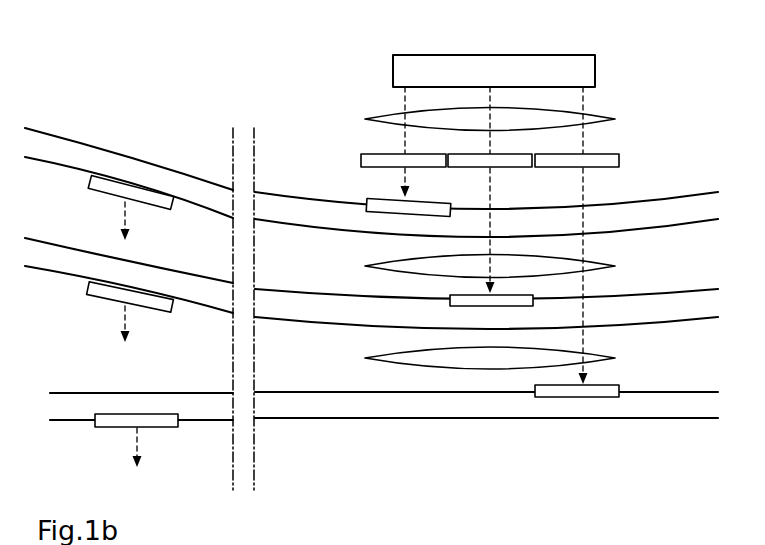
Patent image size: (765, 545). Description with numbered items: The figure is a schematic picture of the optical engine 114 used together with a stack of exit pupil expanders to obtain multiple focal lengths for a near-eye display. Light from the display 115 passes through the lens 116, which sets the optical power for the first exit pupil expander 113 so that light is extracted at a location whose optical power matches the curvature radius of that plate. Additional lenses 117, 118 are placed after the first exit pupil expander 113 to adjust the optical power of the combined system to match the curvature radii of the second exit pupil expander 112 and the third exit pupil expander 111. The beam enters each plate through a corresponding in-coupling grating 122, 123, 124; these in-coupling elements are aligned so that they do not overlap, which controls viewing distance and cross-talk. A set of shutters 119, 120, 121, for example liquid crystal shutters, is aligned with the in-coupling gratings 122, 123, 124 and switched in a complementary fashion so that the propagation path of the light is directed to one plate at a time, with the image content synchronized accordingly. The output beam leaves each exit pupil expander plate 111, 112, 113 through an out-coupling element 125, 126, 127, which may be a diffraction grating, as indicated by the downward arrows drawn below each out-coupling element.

The third exit pupil expander plate 111 is at (135, 393).
The second exit pupil expander plate 112 is at (130, 268).
The first exit pupil expander plate 113 is at (112, 160).
The optical engine 114 is at (157, 53).
The display 115 is at (575, 55).
The lens 116 is at (615, 118).
The lens 117 is at (615, 265).
The lens 118 is at (615, 358).
The shutter 119 is at (603, 155).
The shutter 120 is at (448, 153).
The shutter 121 is at (361, 158).
The in-coupling grating 122 is at (387, 198).
The in-coupling grating 123 is at (450, 298).
The in-coupling grating 124 is at (620, 388).
The out-coupling element 125 is at (110, 197).
The out-coupling element 126 is at (108, 300).
The out-coupling element 127 is at (113, 428).